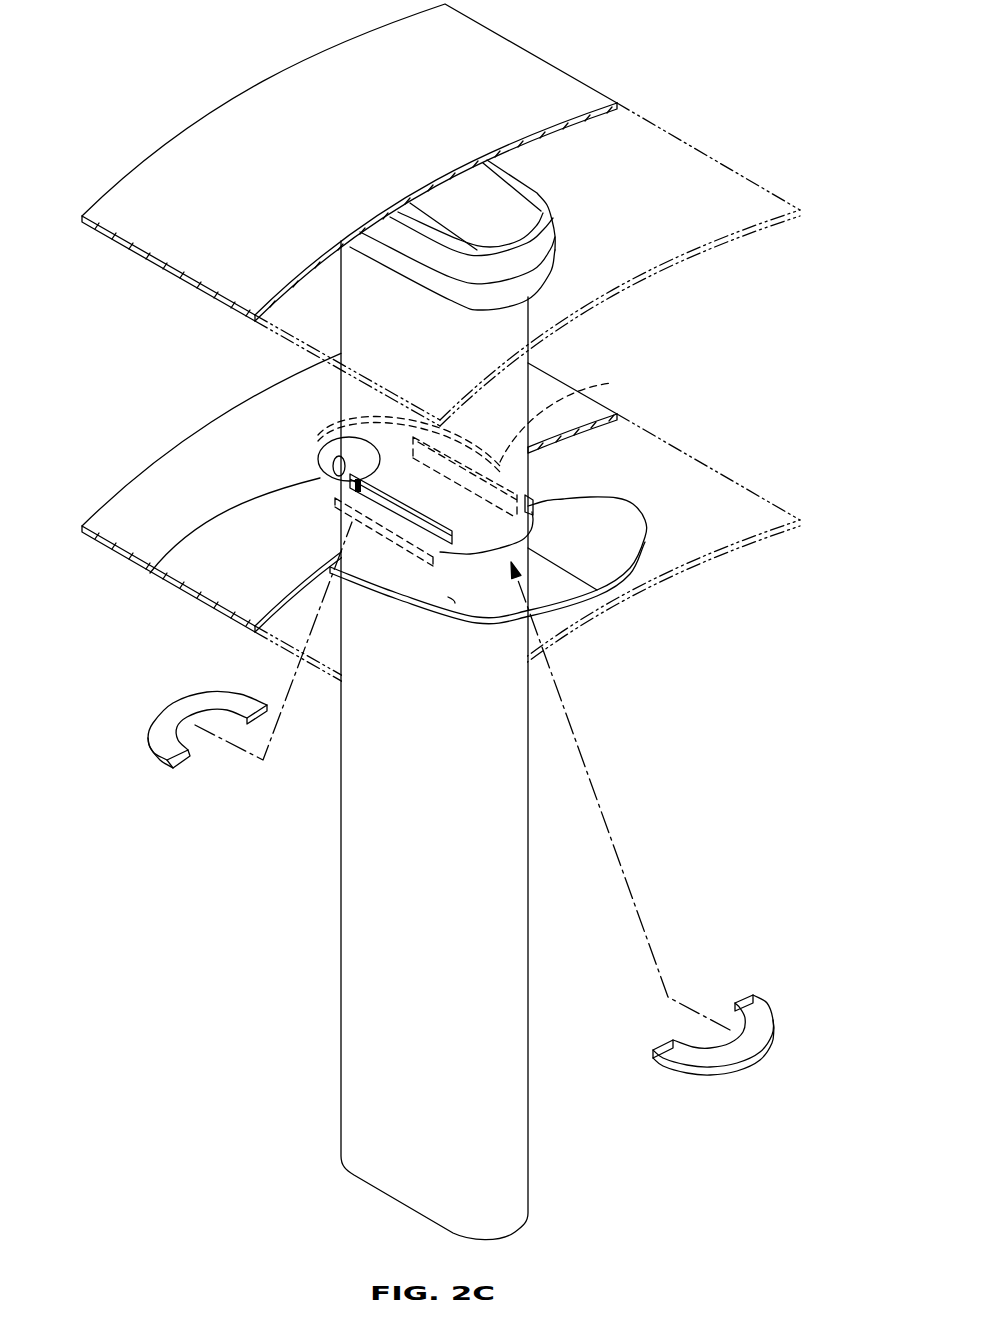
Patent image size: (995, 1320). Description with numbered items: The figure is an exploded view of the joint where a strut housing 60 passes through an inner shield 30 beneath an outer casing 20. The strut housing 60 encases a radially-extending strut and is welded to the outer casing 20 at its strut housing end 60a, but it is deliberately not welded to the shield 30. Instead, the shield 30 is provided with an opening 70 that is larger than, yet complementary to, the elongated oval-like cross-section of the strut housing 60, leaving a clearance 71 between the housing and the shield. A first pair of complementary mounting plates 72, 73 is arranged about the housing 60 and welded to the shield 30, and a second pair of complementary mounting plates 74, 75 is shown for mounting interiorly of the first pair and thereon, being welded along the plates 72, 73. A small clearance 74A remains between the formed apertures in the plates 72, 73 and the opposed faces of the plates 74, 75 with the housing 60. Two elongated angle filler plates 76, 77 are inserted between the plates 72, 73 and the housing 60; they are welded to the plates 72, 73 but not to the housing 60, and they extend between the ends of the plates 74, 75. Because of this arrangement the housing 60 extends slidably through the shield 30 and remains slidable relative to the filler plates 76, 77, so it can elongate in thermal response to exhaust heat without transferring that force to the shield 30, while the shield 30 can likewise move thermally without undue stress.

The outer casing 20 is at (140, 185).
The shield 30 is at (125, 503).
The strut housing 60 is at (530, 977).
The strut housing end 60a is at (528, 187).
The opening 70 is at (320, 450).
The clearance 71 is at (167, 563).
The mounting plate 72 is at (455, 603).
The mounting plate 73 is at (529, 551).
The mounting plate 74 is at (152, 725).
The clearance 74A is at (640, 500).
The mounting plate 75 is at (768, 1012).
The angle filler plate 76 is at (375, 473).
The angle filler plate 77 is at (598, 385).